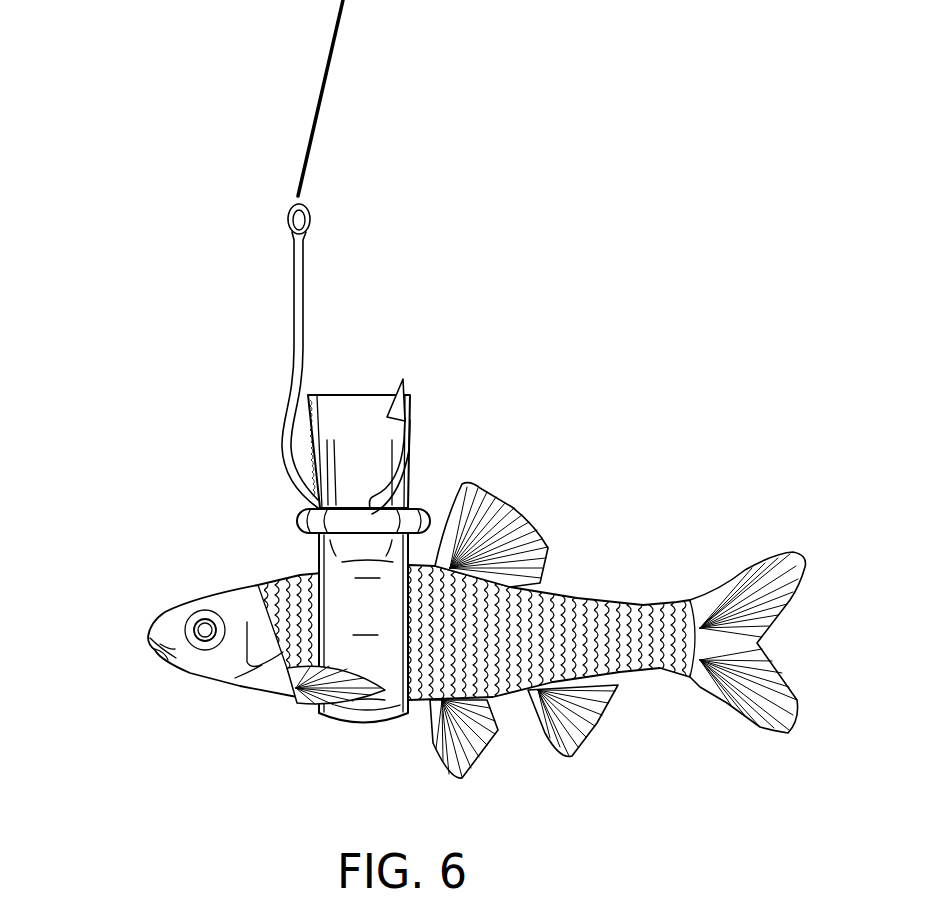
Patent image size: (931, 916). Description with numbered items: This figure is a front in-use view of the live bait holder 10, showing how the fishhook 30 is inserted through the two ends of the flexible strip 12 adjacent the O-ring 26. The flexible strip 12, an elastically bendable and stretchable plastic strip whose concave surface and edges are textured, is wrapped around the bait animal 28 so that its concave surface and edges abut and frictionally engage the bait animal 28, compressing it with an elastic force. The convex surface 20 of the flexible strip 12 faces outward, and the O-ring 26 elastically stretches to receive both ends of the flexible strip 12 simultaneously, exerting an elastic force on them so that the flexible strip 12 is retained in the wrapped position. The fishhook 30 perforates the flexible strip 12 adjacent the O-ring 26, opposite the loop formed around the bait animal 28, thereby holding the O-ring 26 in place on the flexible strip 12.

The live bait holder 10 is at (485, 425).
The flexible strip 12 is at (318, 737).
The convex surface 20 is at (377, 700).
The O-ring 26 is at (275, 526).
The bait animal 28 is at (160, 683).
The fishhook 30 is at (272, 308).